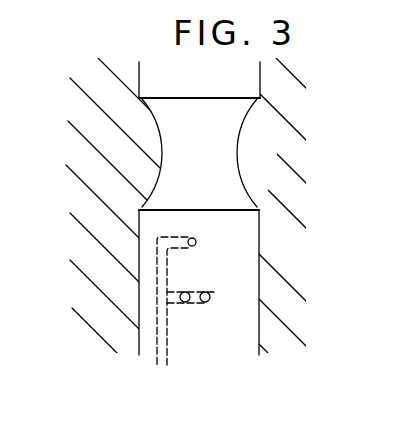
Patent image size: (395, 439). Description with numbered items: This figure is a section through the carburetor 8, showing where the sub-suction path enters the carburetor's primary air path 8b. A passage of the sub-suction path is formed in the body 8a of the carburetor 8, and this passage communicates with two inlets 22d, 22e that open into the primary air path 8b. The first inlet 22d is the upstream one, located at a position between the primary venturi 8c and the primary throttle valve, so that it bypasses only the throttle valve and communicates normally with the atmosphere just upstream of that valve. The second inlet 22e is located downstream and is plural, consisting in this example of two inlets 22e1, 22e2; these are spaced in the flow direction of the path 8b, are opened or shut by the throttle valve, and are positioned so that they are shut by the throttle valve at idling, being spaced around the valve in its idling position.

The carburetor 8 is at (263, 162).
The primary venturi 8c is at (244, 188).
The body 8a is at (282, 262).
The primary air path 8b is at (248, 312).
The inlet 22d is at (188, 239).
The inlet 22e is at (213, 362).
The inlet 22e1 is at (184, 303).
The inlet 22e2 is at (210, 303).